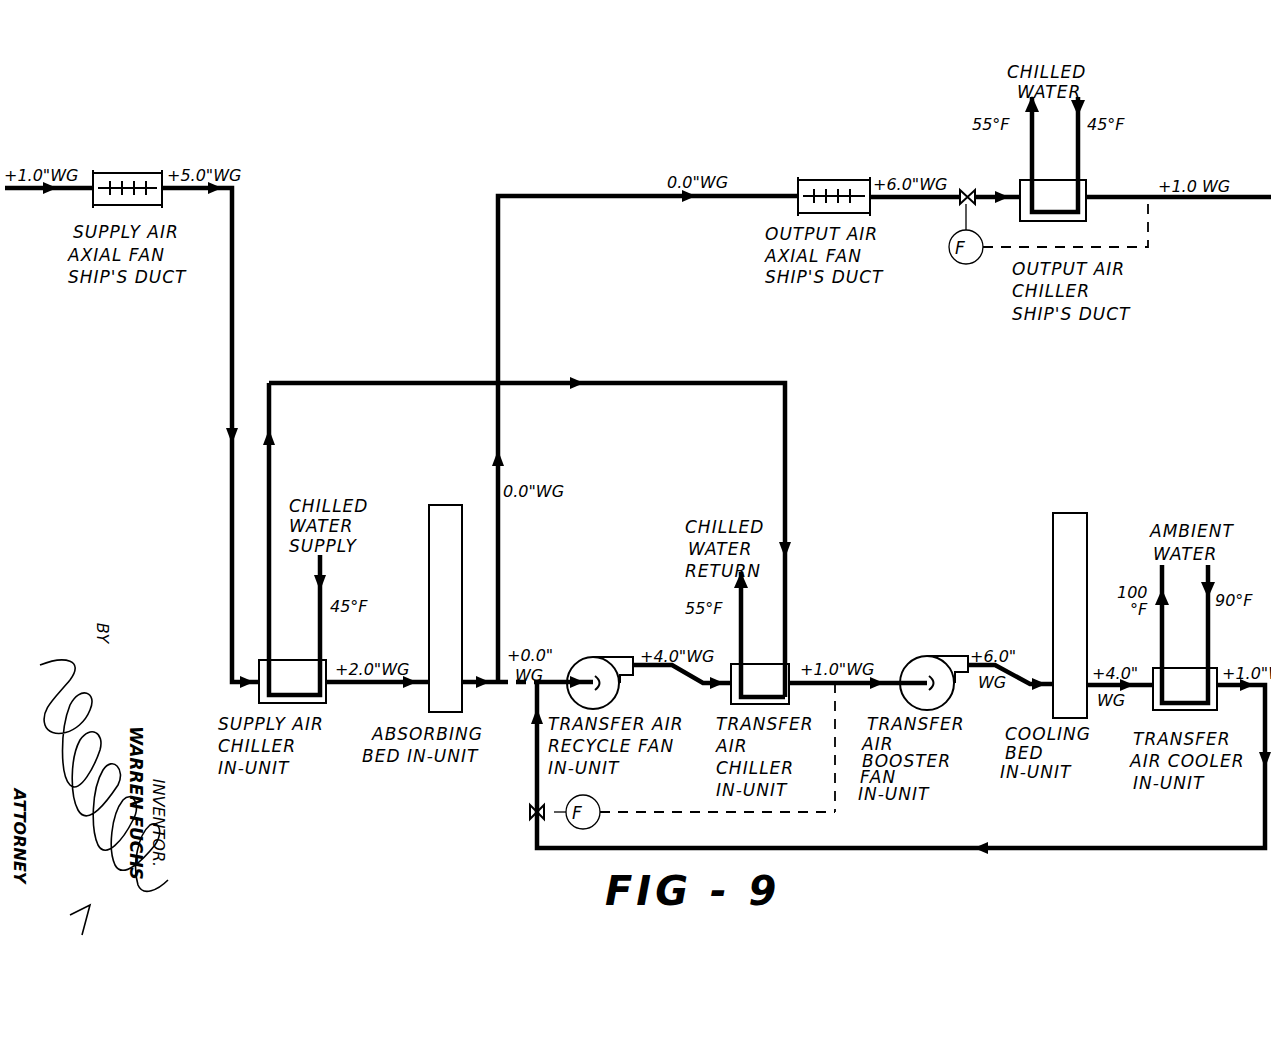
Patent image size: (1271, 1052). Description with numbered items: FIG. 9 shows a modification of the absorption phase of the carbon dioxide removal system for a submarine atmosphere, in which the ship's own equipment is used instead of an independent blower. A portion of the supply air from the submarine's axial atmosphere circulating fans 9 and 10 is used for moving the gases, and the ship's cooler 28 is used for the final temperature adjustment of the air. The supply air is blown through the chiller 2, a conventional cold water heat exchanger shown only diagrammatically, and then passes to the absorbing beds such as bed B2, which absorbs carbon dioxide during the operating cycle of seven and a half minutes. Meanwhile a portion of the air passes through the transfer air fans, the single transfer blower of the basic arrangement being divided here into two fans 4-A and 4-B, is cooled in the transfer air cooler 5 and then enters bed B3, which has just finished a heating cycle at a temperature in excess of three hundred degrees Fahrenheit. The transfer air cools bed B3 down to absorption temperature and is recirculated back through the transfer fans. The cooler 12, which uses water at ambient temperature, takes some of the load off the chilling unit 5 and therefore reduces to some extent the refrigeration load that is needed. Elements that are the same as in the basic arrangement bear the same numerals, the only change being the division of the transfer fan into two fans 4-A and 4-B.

The axial atmosphere circulating fan 9 is at (125, 173).
The ship's fan 10 is at (829, 180).
The ship's cooler 28 is at (1046, 181).
The chiller 2 is at (285, 660).
The bed B2 is at (445, 505).
The fan 4-A is at (592, 657).
The transfer air cooler 5 is at (759, 664).
The fan 4-B is at (928, 656).
The bed B3 is at (1066, 513).
The cooler 12 is at (1176, 668).